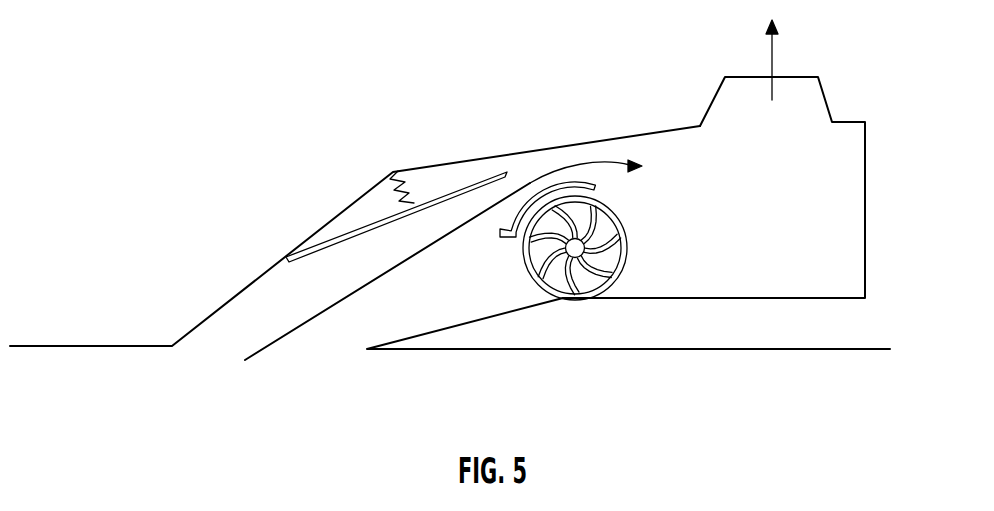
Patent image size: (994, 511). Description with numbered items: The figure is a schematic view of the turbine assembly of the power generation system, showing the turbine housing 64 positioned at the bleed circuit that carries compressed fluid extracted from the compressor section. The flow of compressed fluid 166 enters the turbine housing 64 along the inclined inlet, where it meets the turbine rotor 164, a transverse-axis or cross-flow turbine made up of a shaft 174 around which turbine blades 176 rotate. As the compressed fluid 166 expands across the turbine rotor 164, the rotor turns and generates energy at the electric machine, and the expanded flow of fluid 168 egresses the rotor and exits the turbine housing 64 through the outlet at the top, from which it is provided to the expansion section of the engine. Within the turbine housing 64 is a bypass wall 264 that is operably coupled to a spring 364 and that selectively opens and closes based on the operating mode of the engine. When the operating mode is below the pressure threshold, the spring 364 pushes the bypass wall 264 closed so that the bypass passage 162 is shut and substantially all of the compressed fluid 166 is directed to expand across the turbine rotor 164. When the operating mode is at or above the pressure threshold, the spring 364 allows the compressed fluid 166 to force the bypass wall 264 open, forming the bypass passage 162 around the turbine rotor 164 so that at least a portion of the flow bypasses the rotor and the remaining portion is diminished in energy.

The turbine housing 64 is at (353, 140).
The bypass passage 162 is at (522, 177).
The turbine rotor 164 is at (613, 252).
The flow of compressed fluid 166 is at (287, 335).
The flow of fluid exiting turbine housing 168 is at (772, 55).
The shaft 174 is at (575, 248).
The turbine blades 176 is at (608, 266).
The bypass wall 264 is at (358, 225).
The spring 364 is at (417, 200).